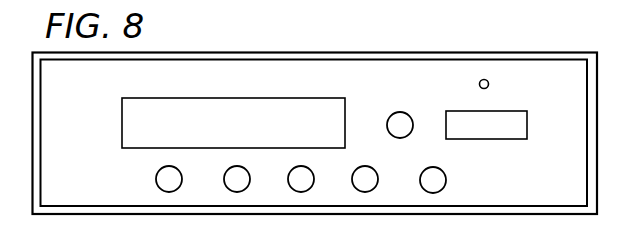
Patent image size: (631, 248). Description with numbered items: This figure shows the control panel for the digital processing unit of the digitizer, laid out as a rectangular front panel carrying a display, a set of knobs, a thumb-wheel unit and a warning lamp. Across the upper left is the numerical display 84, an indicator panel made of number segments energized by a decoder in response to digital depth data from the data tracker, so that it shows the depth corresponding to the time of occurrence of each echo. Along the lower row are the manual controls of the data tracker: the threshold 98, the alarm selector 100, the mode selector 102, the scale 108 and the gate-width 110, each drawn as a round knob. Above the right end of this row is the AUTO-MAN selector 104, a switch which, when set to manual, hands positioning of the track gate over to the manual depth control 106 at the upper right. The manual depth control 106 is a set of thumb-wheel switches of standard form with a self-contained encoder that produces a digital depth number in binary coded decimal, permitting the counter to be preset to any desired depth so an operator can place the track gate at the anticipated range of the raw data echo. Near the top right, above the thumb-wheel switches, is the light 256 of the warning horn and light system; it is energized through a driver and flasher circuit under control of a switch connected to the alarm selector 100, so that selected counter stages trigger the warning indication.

The numerical display 84 is at (230, 101).
The light 256 is at (488, 80).
The AUTO-MAN selector 104 is at (400, 112).
The manual depth control 106 is at (504, 111).
The alarm selector 100 is at (182, 182).
The scale control 108 is at (248, 181).
The threshold control 98 is at (312, 181).
The gate-width control 110 is at (368, 167).
The mode selector 102 is at (437, 169).